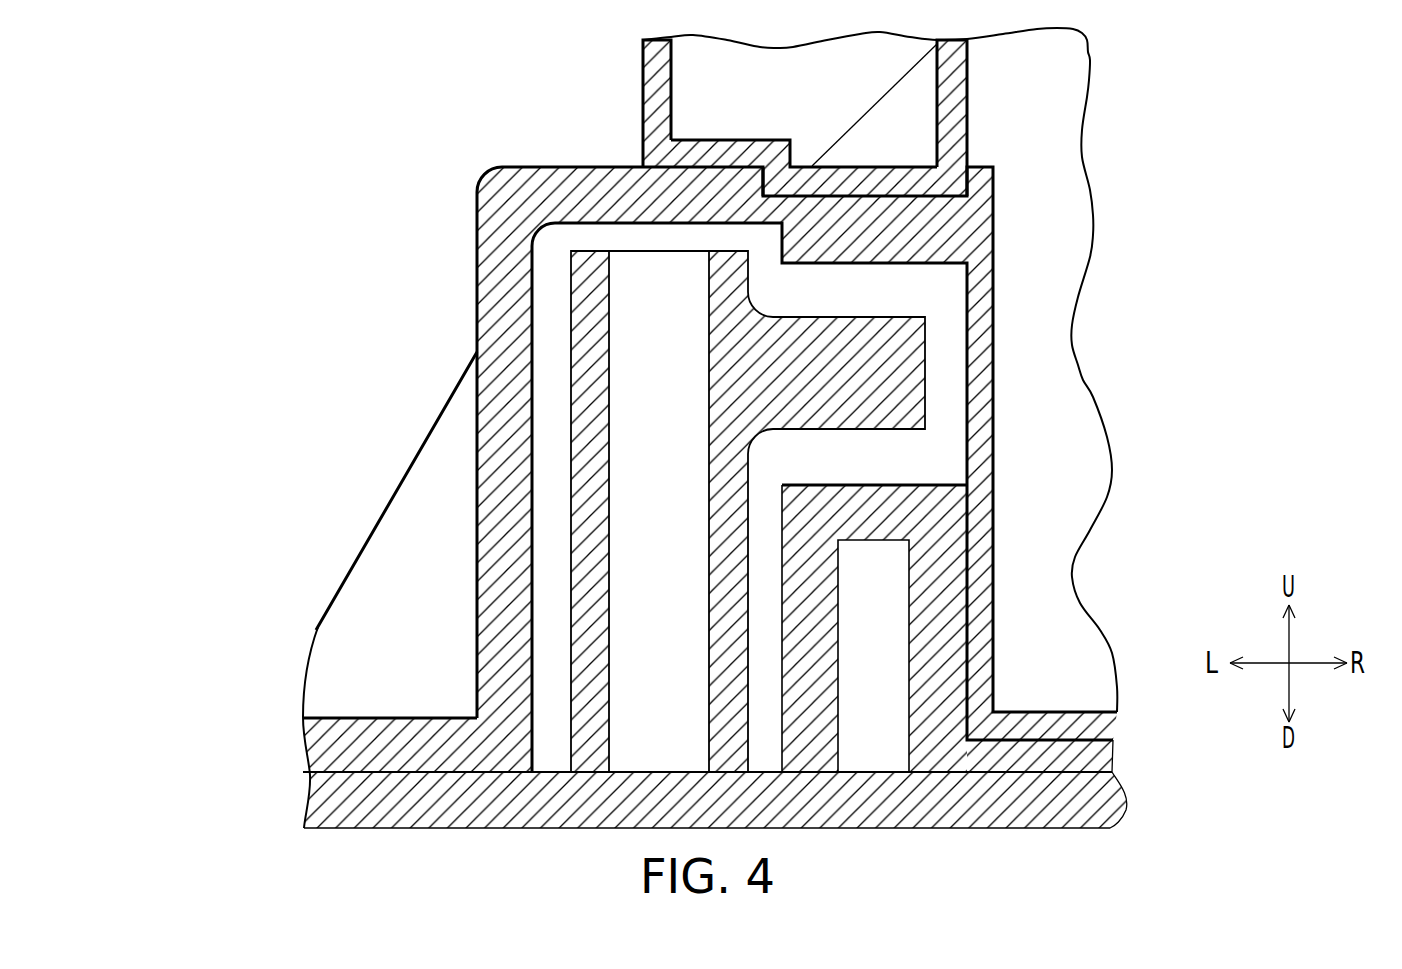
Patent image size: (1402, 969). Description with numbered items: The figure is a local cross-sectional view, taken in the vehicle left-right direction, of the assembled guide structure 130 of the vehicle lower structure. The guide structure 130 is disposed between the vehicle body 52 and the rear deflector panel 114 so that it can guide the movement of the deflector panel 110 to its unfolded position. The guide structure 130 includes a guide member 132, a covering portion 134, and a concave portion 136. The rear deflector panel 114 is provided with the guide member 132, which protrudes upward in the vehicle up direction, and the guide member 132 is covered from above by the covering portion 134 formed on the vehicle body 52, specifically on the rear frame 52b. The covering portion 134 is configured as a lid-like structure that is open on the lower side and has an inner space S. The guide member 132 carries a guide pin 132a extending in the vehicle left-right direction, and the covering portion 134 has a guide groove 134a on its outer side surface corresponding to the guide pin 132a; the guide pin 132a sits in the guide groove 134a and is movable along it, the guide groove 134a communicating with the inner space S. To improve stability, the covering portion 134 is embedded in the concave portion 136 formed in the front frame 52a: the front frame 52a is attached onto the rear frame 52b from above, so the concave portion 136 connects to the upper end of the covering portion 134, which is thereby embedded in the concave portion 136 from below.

The guide structure 130 is at (734, 418).
The guide member 132 is at (650, 512).
The guide pin 132a is at (888, 397).
The covering portion 134 is at (535, 225).
The guide groove 134a is at (903, 297).
The concave portion 136 is at (733, 167).
The vehicle body 52 is at (721, 428).
The front frame 52a is at (997, 90).
The rear frame 52b is at (423, 680).
The rear deflector panel 114 is at (428, 798).
The deflector panel 110 is at (616, 788).
The inner space S is at (578, 240).